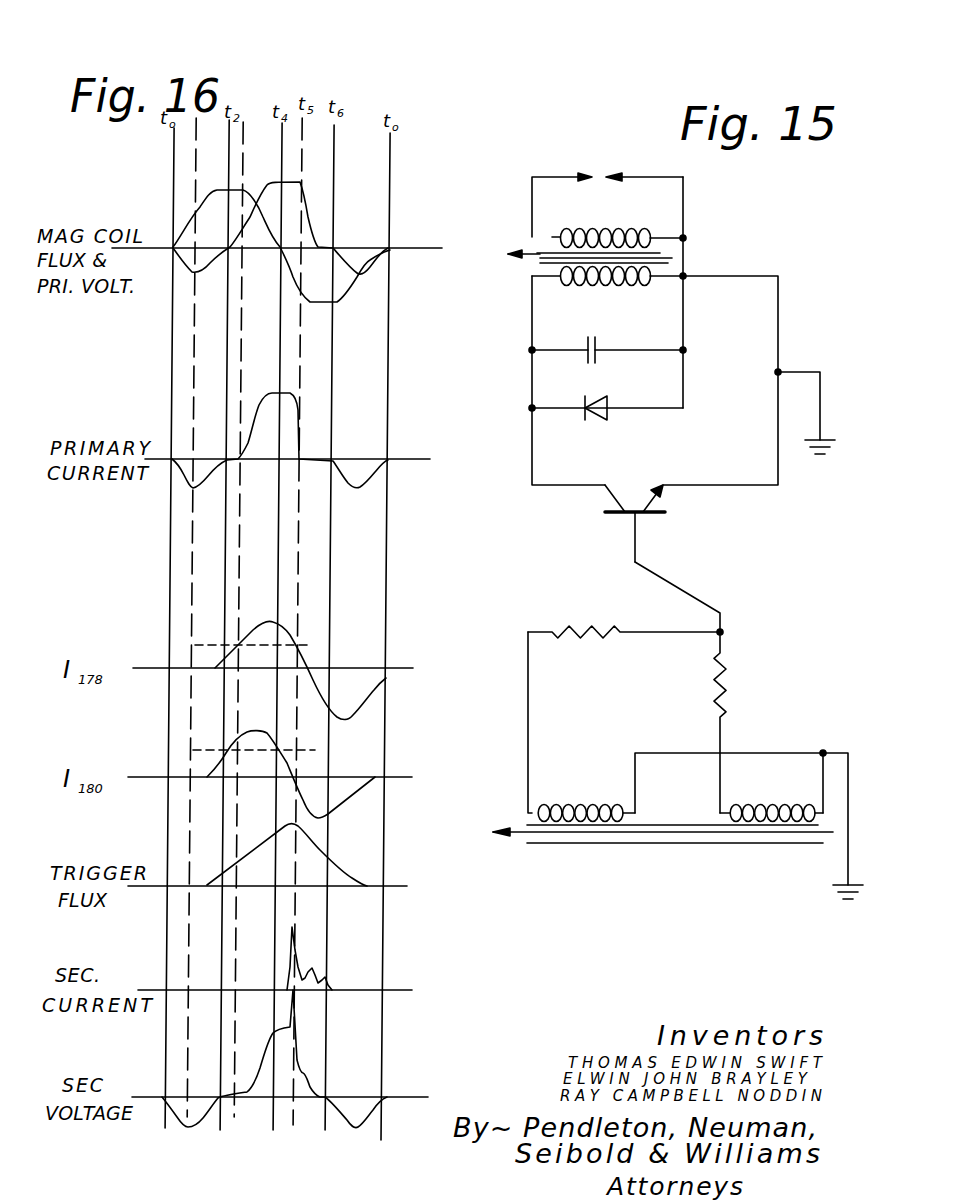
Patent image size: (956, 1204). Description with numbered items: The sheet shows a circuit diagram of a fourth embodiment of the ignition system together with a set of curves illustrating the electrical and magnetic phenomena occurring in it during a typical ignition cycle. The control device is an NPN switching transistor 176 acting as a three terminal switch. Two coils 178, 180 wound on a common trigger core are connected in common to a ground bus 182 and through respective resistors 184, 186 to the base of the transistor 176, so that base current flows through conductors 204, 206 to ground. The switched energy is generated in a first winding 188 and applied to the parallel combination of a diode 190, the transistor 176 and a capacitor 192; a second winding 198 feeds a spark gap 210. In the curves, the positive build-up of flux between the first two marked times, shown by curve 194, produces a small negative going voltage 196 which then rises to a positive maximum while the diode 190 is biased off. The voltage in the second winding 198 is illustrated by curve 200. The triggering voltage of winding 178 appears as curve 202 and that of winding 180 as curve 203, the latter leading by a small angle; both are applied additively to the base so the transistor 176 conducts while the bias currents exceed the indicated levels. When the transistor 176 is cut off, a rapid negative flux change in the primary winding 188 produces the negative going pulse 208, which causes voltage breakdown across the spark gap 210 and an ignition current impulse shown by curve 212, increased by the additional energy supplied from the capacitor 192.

In FIG. 15, the transistor 176 is at (634, 520).
In FIG. 15, the coil 178 is at (580, 805).
In FIG. 15, the coil 180 is at (758, 788).
In FIG. 15, the ground bus 182 is at (850, 753).
In FIG. 15, the resistor 184 is at (585, 628).
In FIG. 15, the resistor 186 is at (725, 690).
In FIG. 15, the first winding 188 is at (603, 279).
In FIG. 15, the diode 190 is at (596, 420).
In FIG. 15, the capacitor 192 is at (588, 353).
In FIG. 16, the flux curve 194 is at (216, 190).
In FIG. 16, the voltage curve 196 is at (200, 270).
In FIG. 15, the second winding 198 is at (589, 231).
In FIG. 16, the secondary voltage curve 200 is at (298, 1060).
In FIG. 16, the triggering voltage curve 202 is at (378, 685).
In FIG. 16, the voltage curve 203 is at (358, 780).
In FIG. 15, the conductor 204 is at (672, 585).
In FIG. 15, the conductor 206 is at (778, 458).
In FIG. 16, the negative going pulse 208 is at (303, 292).
In FIG. 15, the spark gap 210 is at (585, 175).
In FIG. 16, the ignition current curve 212 is at (298, 958).